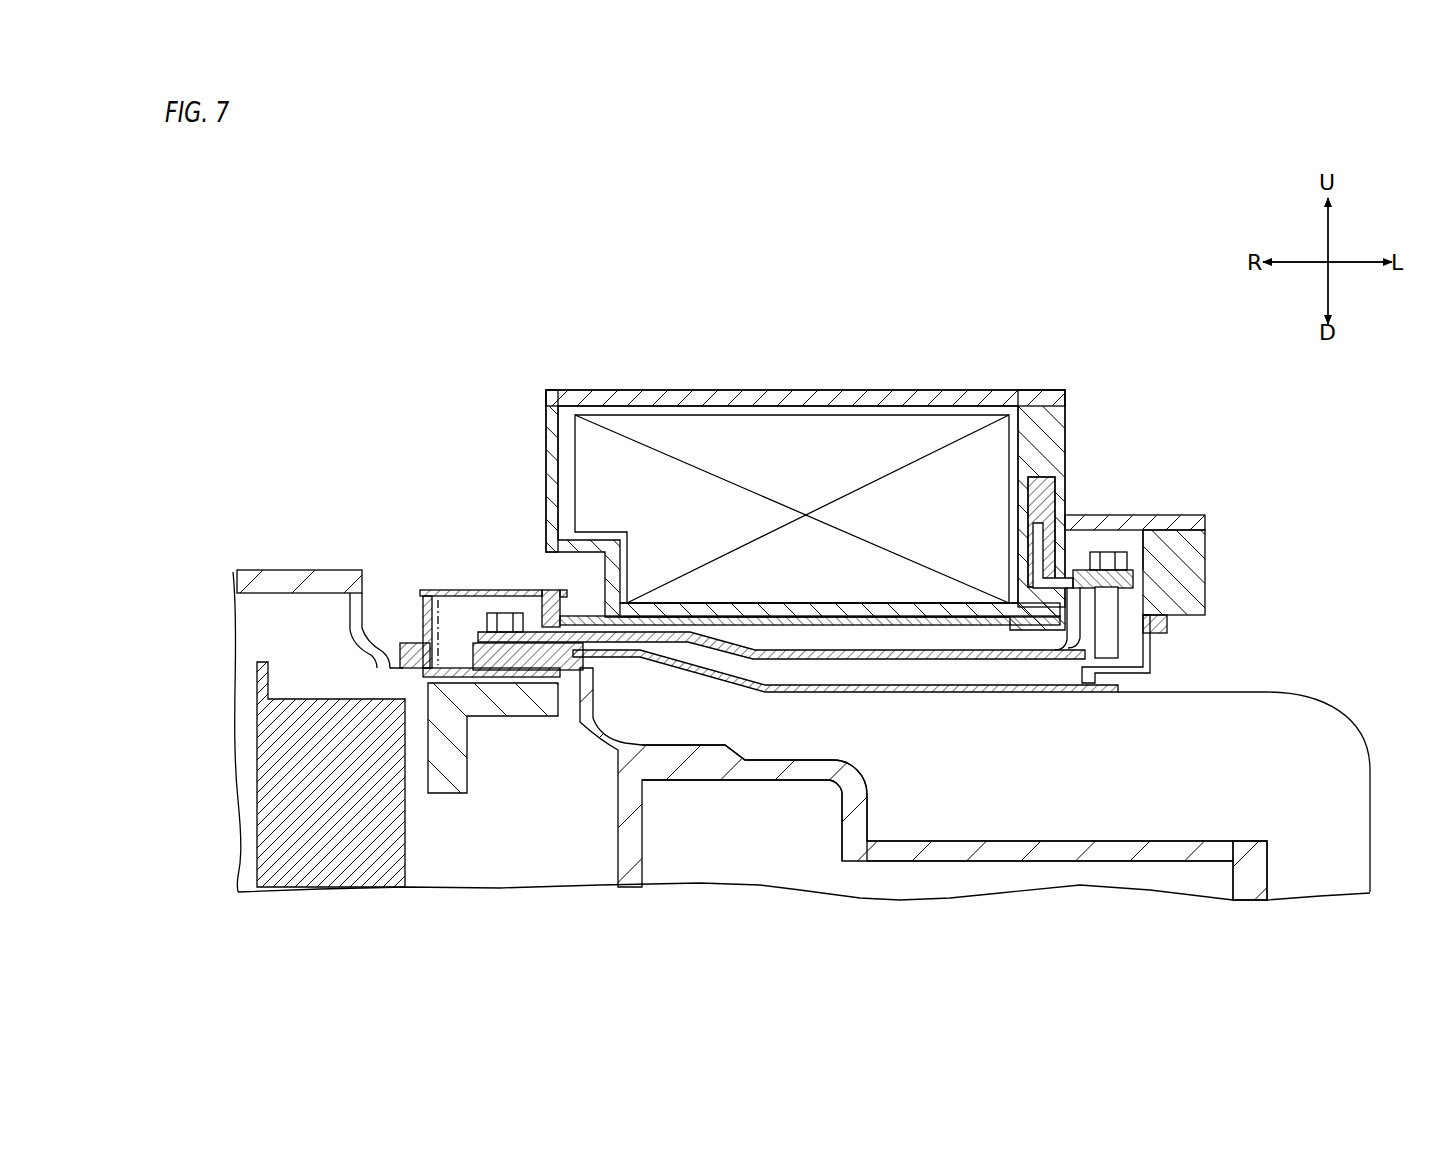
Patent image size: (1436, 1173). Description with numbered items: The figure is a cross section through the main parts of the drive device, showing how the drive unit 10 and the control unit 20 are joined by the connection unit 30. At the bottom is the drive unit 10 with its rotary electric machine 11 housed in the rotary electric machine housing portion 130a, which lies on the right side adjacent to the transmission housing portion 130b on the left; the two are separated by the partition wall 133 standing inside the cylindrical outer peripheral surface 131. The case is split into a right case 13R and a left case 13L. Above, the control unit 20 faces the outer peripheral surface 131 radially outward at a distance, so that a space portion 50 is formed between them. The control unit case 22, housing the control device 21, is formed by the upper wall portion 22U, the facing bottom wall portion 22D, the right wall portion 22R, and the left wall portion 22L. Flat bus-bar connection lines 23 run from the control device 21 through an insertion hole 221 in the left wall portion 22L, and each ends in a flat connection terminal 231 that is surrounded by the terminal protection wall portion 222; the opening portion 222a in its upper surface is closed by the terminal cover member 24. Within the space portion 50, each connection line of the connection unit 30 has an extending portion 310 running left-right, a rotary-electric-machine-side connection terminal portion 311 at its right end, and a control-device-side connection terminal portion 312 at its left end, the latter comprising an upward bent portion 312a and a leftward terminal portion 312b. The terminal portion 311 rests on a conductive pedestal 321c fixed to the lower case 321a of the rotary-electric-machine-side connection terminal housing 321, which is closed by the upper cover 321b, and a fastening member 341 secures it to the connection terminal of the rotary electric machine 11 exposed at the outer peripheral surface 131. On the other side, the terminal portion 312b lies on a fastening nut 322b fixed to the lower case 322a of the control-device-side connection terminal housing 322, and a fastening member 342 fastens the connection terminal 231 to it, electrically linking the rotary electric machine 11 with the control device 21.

The drive unit 10 is at (1336, 684).
The rotary electric machine 11 is at (325, 735).
The right case 13R is at (318, 560).
The left case 13L is at (995, 855).
The rotary electric machine housing portion 130a is at (540, 893).
The transmission housing portion 130b is at (805, 865).
The outer peripheral surface 131 is at (950, 693).
The partition wall 133 is at (628, 828).
The control unit 20 is at (1066, 350).
The control device 21 is at (885, 455).
The control unit case 22 is at (802, 529).
The upper wall portion 22U is at (703, 390).
The bottom wall portion 22D is at (805, 615).
The right wall portion 22R is at (546, 428).
The left wall portion 22L is at (1066, 433).
The connection line 23 is at (1062, 482).
The insertion hole 221 is at (1045, 545).
The terminal protection wall portion 222 is at (1190, 585).
The opening portion 222a is at (1135, 545).
The connection terminal 231 is at (1125, 576).
The terminal cover member 24 is at (1195, 520).
The connection unit 30 is at (650, 612).
The extending portion 310 is at (700, 660).
The rotary-electric-machine-side connection terminal portion 311 is at (520, 672).
The control-device-side connection terminal portion 312 is at (1085, 700).
The bent portion 312a is at (1068, 618).
The terminal portion 312b is at (1105, 612).
The rotary-electric-machine-side connection terminal housing 321 is at (427, 571).
The lower case 321a is at (457, 665).
The upper cover 321b is at (478, 588).
The conductive pedestal 321c is at (475, 640).
The control-device-side connection terminal housing 322 is at (1194, 649).
The lower case 322a is at (1152, 652).
The fastening nut 322b is at (1170, 628).
The fastening member 341 is at (505, 615).
The fastening member 342 is at (1108, 560).
The space portion 50 is at (765, 722).